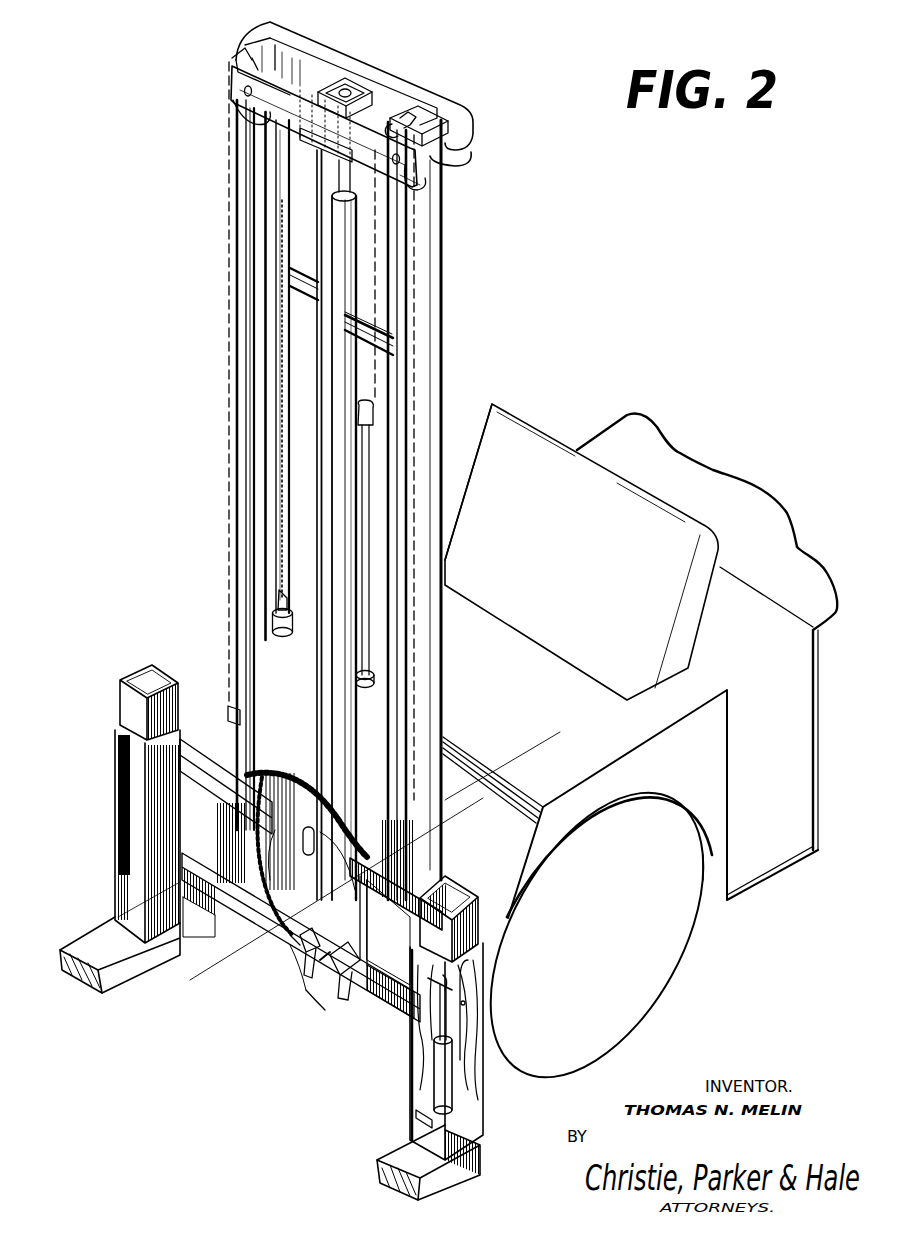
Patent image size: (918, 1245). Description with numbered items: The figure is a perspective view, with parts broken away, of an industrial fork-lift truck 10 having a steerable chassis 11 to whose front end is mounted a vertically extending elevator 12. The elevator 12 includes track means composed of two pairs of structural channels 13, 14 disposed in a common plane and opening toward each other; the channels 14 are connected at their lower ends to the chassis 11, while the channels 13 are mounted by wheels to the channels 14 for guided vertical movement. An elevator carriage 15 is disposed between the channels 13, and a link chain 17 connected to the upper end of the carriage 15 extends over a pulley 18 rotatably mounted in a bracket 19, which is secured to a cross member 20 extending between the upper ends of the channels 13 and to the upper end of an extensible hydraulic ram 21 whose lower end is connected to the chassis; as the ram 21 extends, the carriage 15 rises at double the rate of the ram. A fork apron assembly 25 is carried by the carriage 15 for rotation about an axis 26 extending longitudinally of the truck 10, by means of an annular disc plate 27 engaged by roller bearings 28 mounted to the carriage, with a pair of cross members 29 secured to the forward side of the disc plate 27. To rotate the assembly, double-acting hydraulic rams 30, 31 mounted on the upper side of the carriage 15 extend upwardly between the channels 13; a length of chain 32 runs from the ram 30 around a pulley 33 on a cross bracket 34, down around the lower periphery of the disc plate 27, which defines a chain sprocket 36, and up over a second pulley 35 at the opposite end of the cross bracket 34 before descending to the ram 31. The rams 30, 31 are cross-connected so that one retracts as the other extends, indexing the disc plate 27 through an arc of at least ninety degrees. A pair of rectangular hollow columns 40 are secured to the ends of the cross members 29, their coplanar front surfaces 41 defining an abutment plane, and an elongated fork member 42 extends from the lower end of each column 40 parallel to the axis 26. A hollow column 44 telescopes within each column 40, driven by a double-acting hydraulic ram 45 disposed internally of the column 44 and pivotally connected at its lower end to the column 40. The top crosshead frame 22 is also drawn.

The industrial fork-lift truck 10 is at (600, 405).
The steerable chassis 11 is at (752, 798).
The elevator 12 is at (226, 458).
The structural channels 13 is at (258, 220).
The structural channels 14 is at (236, 163).
The elevator carriage 15 is at (300, 968).
The link chain 17 is at (320, 196).
The pulley 18 is at (350, 80).
The bracket 19 is at (400, 98).
The cross member 20 is at (405, 115).
The extensible hydraulic ram 21 is at (345, 316).
The top crosshead frame 22 is at (335, 47).
The fork apron assembly 25 is at (85, 896).
The axis 26 is at (520, 770).
The annular disc plate 27 is at (320, 985).
The roller bearings 28 is at (300, 840).
The cross members 29 is at (200, 768).
The double-acting extensible hydraulic ram 30 is at (270, 630).
The double-acting extensible hydraulic ram 31 is at (376, 688).
The chain 32 is at (235, 708).
The pulley 33 is at (234, 68).
The cross bracket 34 is at (240, 80).
The second pulley 35 is at (415, 185).
The chain sprocket 36 is at (405, 855).
The hollow columns 40 is at (470, 960).
The front surfaces 41 is at (130, 795).
The elongated fork member 42 is at (115, 970).
The hollow rectangularly configured column 44 is at (118, 686).
The double-acting hydraulic ram 45 is at (440, 1076).